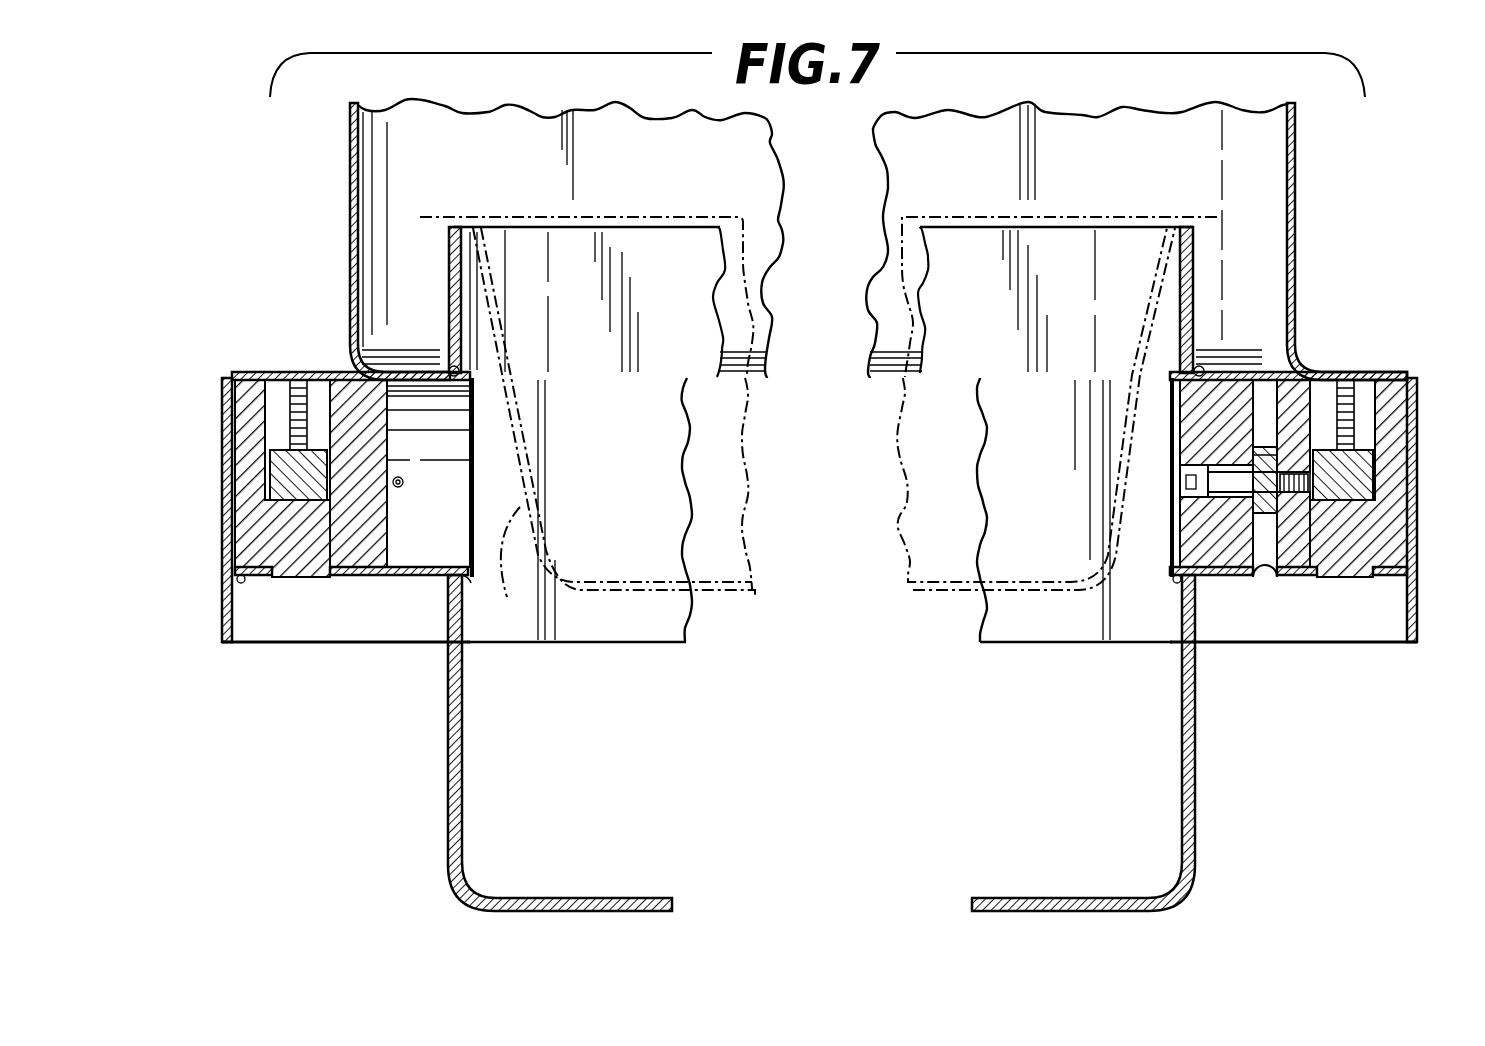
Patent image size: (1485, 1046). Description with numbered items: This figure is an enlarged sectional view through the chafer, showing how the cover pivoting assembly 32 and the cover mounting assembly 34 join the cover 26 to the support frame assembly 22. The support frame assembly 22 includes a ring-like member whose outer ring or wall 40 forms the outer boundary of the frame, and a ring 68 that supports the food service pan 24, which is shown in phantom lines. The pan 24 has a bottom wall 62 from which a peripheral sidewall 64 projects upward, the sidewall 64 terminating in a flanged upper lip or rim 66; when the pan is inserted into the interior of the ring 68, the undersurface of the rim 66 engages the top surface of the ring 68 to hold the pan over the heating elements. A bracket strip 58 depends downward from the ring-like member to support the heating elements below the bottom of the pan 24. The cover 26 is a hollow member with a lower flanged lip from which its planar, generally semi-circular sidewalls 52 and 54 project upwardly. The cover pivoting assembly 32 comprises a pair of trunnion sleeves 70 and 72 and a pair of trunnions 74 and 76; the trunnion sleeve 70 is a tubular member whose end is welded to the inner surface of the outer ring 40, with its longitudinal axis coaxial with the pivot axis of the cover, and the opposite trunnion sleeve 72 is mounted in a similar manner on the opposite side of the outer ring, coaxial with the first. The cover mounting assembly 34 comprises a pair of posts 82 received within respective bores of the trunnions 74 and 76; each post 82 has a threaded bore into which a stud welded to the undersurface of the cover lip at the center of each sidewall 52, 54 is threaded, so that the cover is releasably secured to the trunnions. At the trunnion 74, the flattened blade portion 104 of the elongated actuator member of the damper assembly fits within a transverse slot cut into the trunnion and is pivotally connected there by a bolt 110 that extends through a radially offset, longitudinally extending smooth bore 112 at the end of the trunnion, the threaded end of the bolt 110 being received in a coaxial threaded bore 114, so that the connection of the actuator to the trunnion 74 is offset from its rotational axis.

The support frame assembly 22 is at (1415, 655).
The food service pan 24 is at (1077, 206).
The cover 26 is at (1302, 222).
The cover pivoting assembly 32 is at (402, 582).
The cover mounting assembly 34 is at (280, 403).
The outer ring 40 is at (224, 600).
The sidewall 52 is at (1298, 262).
The sidewall 54 is at (348, 207).
The bracket strip 58 is at (461, 760).
The bottom wall 62 is at (652, 595).
The peripheral sidewall 64 is at (614, 431).
The rim 66 is at (522, 215).
The ring 68 is at (449, 333).
The trunnion sleeve 70 is at (1235, 580).
The trunnion sleeve 72 is at (344, 578).
The trunnion 74 is at (1397, 543).
The trunnion 76 is at (244, 531).
The post 82 is at (274, 448).
The blade portion 104 is at (1257, 446).
The bolt 110 is at (1180, 470).
The smooth bore 112 is at (1232, 478).
The threaded bore 114 is at (1292, 494).